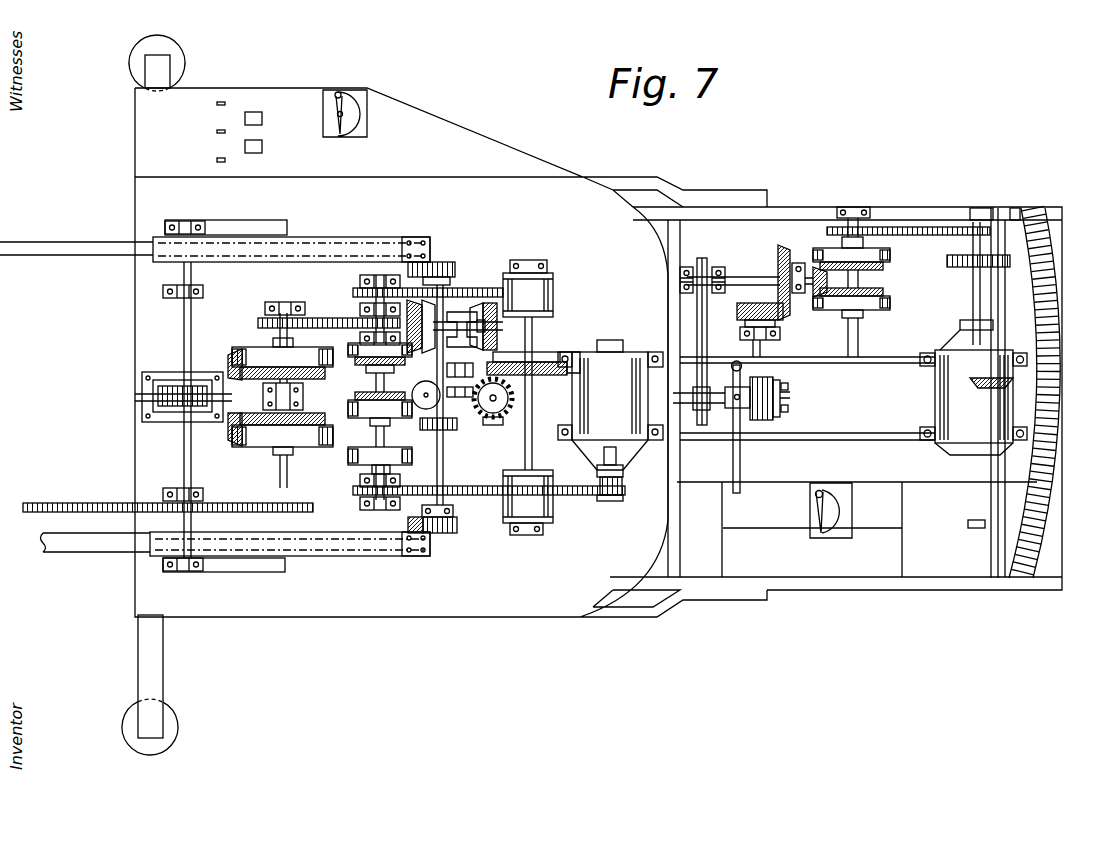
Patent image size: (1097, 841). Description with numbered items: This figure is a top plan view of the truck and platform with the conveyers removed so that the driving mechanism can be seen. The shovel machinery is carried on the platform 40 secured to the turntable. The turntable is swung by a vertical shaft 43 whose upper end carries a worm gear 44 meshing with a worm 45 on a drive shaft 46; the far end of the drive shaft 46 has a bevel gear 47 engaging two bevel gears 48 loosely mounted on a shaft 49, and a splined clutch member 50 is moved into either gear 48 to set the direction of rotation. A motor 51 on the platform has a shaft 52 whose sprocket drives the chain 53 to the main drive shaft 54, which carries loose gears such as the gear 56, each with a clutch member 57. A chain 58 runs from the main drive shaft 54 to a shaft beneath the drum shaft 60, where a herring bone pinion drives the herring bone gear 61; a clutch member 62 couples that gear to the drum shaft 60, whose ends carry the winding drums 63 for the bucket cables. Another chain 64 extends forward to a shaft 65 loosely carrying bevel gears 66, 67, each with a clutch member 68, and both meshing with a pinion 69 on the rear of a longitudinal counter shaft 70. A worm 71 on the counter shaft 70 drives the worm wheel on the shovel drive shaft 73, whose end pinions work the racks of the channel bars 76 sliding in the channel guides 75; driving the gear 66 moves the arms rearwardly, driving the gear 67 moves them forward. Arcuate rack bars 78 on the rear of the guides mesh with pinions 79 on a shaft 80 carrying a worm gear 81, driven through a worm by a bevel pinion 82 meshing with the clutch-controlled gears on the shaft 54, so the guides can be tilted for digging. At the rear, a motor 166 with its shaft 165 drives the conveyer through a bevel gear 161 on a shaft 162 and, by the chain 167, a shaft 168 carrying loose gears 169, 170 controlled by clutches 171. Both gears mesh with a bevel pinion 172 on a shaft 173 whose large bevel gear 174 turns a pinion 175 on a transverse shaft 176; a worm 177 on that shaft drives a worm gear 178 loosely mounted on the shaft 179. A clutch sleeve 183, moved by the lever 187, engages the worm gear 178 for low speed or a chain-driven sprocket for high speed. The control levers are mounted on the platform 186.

The platform 40 is at (245, 600).
The vertical shaft 43 is at (513, 402).
The worm gear 44 is at (495, 425).
The worm 45 is at (533, 400).
The drive shaft 46 is at (545, 362).
The bevel gear 47 is at (416, 390).
The bevel gears 48 is at (497, 315).
The shaft 49 is at (478, 322).
The clutch member 50 is at (460, 312).
The motor 51 is at (628, 372).
The motor shaft 52 is at (622, 492).
The chain 53 is at (310, 508).
The main drive shaft 54 is at (368, 440).
The gear 56 is at (362, 420).
The clutch member 57 is at (368, 458).
The chain 58 is at (397, 262).
The drum shaft 60 is at (463, 380).
The herring bone gear 61 is at (556, 377).
The clutch member 62 is at (618, 335).
The winding drums 63 is at (555, 300).
The chain 64 is at (322, 318).
The shaft 65 is at (273, 333).
The bevel gear 66 is at (240, 358).
The bevel gear 67 is at (253, 420).
The clutch member 68 is at (268, 430).
The pinion 69 is at (230, 380).
The counter shaft 70 is at (155, 388).
The worm 71 is at (178, 410).
The drive shaft of the shovel 73 is at (183, 462).
The channel guides 75 is at (228, 558).
The channel bars 76 is at (80, 258).
The arcuate rack bars 78 is at (412, 519).
The pinion 79 is at (435, 535).
The shaft 80 is at (444, 480).
The worm gear 81 is at (462, 398).
The bevel pinion 82 is at (425, 432).
The bevel gear 161 is at (990, 388).
The shaft 162 is at (1002, 305).
The motor shaft 165 is at (973, 305).
The motor 166 is at (935, 407).
The chain 167 is at (930, 227).
The shaft 168 is at (860, 284).
The gear 169 is at (888, 296).
The gear 170 is at (890, 268).
The clutch 171 is at (824, 258).
The bevel pinion 172 is at (830, 292).
The shaft 173 is at (740, 278).
The large bevel gear 174 is at (781, 247).
The pinion 175 is at (745, 313).
The shaft 176 is at (763, 354).
The worm 177 is at (783, 394).
The worm gear 178 is at (768, 418).
The shaft 179 is at (722, 410).
The clutch sleeve 183 is at (741, 410).
The platform 186 is at (209, 102).
The lever 187 is at (722, 484).